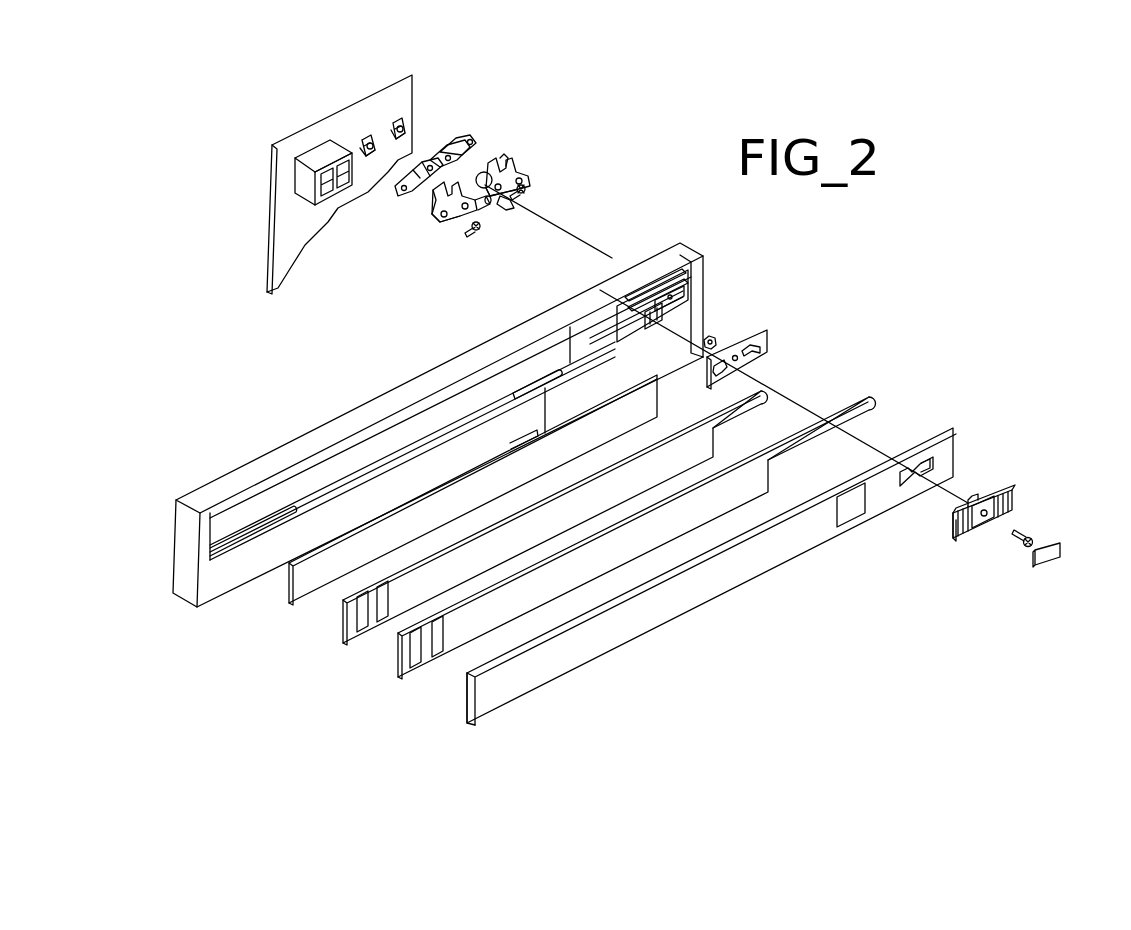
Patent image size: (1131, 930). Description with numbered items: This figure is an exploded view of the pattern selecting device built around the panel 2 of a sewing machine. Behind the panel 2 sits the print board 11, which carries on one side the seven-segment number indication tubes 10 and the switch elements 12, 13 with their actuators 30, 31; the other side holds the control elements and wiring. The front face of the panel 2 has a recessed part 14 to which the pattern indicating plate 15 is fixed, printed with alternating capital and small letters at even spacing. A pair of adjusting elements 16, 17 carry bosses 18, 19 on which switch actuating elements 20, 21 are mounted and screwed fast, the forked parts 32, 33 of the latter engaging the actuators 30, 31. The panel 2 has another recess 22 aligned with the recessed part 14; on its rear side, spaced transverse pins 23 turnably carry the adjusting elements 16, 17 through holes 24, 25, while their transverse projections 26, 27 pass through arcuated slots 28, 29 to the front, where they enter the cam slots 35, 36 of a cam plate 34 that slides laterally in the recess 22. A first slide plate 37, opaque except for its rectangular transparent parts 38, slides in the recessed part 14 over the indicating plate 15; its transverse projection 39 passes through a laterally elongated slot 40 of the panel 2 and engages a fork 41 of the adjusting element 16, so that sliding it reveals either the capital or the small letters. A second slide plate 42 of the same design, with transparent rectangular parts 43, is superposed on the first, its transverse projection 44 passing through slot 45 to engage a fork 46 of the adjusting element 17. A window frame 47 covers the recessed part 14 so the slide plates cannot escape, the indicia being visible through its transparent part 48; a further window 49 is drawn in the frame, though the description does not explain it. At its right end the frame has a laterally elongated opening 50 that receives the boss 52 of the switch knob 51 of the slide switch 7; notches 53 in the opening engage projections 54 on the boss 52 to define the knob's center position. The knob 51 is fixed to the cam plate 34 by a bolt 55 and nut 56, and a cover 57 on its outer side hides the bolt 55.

The panel 2 is at (183, 543).
The slide switch 7 is at (962, 538).
The 7-segment number indication tubes 10 is at (313, 185).
The print board 11 is at (270, 222).
The switch element 12 is at (363, 140).
The switch element 13 is at (395, 126).
The recessed part 14 is at (270, 497).
The pattern indicating plate 15 is at (288, 593).
The adjusting element 16 is at (445, 218).
The adjusting element 17 is at (512, 176).
The boss 18 is at (434, 222).
The boss 19 is at (478, 163).
The switch actuating element 20 is at (400, 190).
The switch actuating element 21 is at (478, 172).
The recess 22 is at (700, 270).
The transverse pins 23 is at (590, 300).
The hole 24 is at (464, 222).
The hole 25 is at (513, 187).
The transverse projection 26 is at (485, 202).
The transverse projection 27 is at (520, 204).
The arcuated slot 28 is at (647, 332).
The arcuated slot 29 is at (673, 300).
The actuator 30 is at (360, 150).
The actuator 31 is at (405, 140).
The forked part 32 is at (428, 163).
The forked part 33 is at (455, 150).
The cam plate 34 is at (765, 332).
The cam slot 35 is at (717, 378).
The cam slot 36 is at (758, 351).
The first slide plate 37 is at (343, 633).
The transparent parts 38 is at (360, 615).
The transverse projection 39 is at (772, 386).
The laterally elongated slot 40 is at (623, 289).
The fork 41 is at (436, 186).
The second slide plate 42 is at (397, 670).
The transparent rectangular parts 43 is at (407, 652).
The transverse projection 44 is at (862, 392).
The laterally elongated slot 45 is at (673, 278).
The fork 46 is at (494, 160).
The window frame 47 is at (467, 700).
The transparent part 48 is at (587, 650).
The window 49 is at (857, 507).
The laterally elongated opening 50 is at (927, 457).
The switch knob 51 is at (1013, 502).
The boss 52 is at (987, 497).
The notches 53 is at (917, 477).
The projections 54 is at (973, 498).
The bolt 55 is at (1034, 538).
The nut 56 is at (715, 340).
The cover 57 is at (1061, 554).